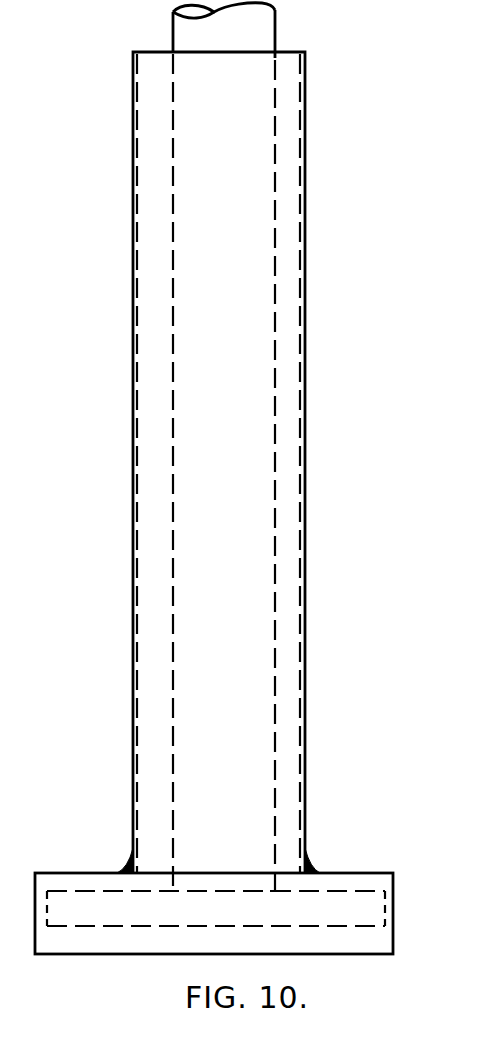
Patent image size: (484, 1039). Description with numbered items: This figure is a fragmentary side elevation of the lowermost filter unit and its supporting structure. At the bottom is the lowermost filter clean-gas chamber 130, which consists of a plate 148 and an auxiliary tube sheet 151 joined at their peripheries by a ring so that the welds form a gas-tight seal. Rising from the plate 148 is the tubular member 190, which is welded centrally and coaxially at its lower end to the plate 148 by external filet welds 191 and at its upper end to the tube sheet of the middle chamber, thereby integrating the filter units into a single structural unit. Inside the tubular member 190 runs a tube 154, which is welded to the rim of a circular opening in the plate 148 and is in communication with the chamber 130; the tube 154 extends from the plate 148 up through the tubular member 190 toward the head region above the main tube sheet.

The tubular member 190 is at (306, 256).
The tube 154 is at (274, 465).
The tube sheet 151 is at (330, 948).
The external filet welds 191 is at (127, 868).
The plate 148 is at (328, 886).
The filter clean-gas chamber 130 is at (385, 868).